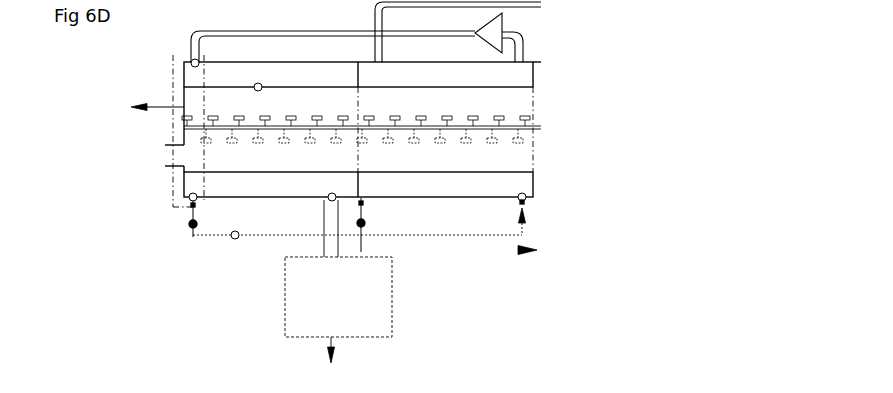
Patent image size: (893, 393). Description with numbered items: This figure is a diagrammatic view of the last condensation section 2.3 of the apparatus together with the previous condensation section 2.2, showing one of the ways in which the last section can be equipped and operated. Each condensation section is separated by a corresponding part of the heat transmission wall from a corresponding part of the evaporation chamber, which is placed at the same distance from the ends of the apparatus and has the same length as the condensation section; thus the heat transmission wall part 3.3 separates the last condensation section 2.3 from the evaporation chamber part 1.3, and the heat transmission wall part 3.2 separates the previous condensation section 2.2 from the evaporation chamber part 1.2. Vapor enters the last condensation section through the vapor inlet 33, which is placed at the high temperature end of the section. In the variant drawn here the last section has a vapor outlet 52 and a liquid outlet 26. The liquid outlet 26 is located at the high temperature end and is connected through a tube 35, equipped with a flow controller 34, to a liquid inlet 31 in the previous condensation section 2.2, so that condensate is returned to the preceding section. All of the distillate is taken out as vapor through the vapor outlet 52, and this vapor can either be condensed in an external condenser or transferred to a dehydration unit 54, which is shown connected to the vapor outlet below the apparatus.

The vapor inlet 33 is at (192, 60).
The heat transmission wall part 3.3 is at (262, 90).
The heat transmission wall part 3.2 is at (445, 89).
The evaporation chamber part 1.3 is at (265, 140).
The evaporation chamber part 1.2 is at (443, 141).
The last condensation section 2.3 is at (271, 184).
The previous condensation section 2.2 is at (445, 184).
The liquid outlet 26 is at (196, 201).
The flow controller 34 is at (188, 225).
The tube 35 is at (235, 239).
The vapor outlet 52 is at (328, 200).
The dehydration unit 54 is at (338, 310).
The liquid inlet 31 is at (526, 201).